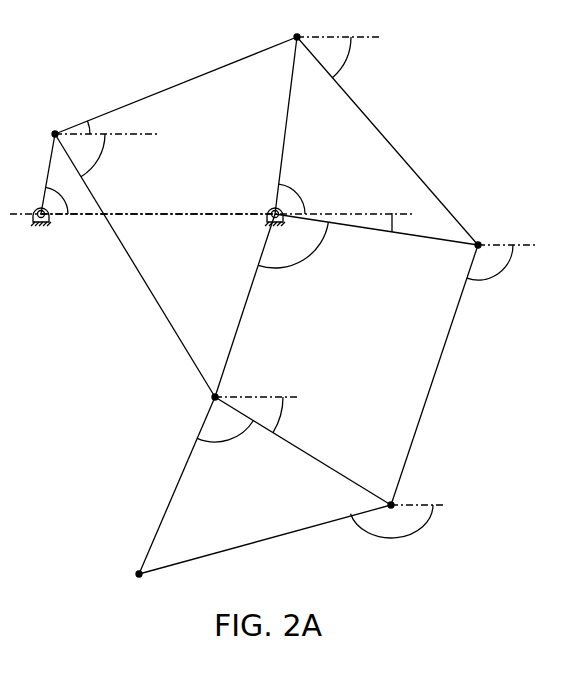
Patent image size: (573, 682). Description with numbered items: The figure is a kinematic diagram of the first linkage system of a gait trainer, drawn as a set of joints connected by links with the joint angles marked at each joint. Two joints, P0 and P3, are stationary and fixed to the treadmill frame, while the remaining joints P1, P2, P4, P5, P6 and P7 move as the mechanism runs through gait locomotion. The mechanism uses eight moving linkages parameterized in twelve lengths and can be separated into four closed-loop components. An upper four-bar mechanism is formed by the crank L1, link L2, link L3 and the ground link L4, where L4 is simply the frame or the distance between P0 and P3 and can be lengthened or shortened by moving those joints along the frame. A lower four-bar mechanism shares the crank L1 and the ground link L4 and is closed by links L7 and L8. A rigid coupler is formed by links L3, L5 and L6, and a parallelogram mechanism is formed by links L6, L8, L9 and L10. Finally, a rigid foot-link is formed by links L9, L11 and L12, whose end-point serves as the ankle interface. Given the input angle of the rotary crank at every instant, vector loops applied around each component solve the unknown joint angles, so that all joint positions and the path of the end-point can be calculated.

The stationary joint P0 is at (29, 227).
The moving joint P1 is at (45, 120).
The moving joint P2 is at (282, 25).
The stationary joint P3 is at (265, 205).
The moving joint P4 is at (485, 227).
The moving joint P5 is at (198, 400).
The moving joint P6 is at (403, 493).
The moving joint P7 is at (120, 571).
The rotary crank link L1 is at (41, 174).
The upper four-bar link L2 is at (176, 85).
The coupler link L3 is at (158, 199).
The ground link L4 is at (279, 125).
The coupler link L5 is at (387, 141).
The coupler link L6 is at (376, 241).
The lower four-bar link L7 is at (135, 265).
The lower four-bar link L8 is at (245, 305).
The parallelogram link L9 is at (303, 451).
The parallelogram link L10 is at (434, 375).
The foot-link side L11 is at (177, 485).
The foot-link side L12 is at (265, 539).